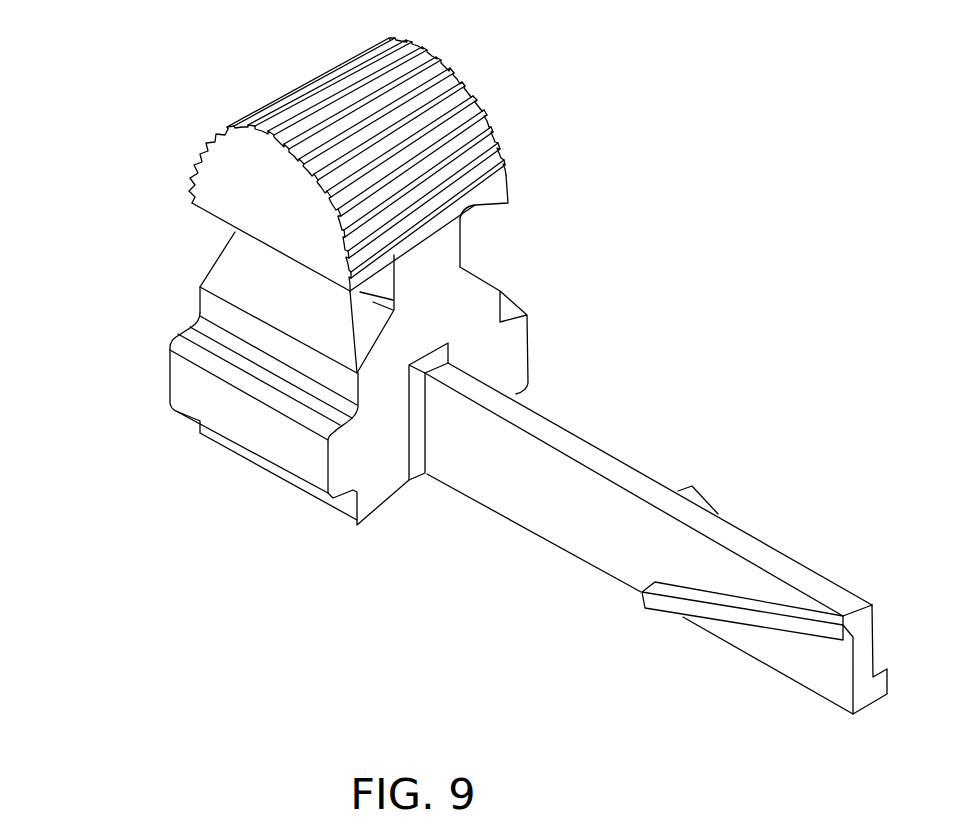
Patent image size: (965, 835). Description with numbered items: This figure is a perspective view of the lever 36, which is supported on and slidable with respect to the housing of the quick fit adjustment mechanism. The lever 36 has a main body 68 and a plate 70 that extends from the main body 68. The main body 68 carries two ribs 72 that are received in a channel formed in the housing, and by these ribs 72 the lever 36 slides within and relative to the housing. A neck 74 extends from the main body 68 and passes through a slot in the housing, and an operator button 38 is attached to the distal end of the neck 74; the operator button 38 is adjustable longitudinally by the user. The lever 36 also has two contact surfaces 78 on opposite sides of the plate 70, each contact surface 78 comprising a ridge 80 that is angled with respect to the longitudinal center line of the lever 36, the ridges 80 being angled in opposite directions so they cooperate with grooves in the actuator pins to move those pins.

The lever 36 is at (802, 188).
The operator button 38 is at (283, 100).
The main body 68 is at (223, 277).
The plate 70 is at (523, 487).
The rib 72 is at (200, 383).
The neck 74 is at (440, 257).
The contact surface 78 is at (830, 520).
The ridge 80 is at (687, 488).